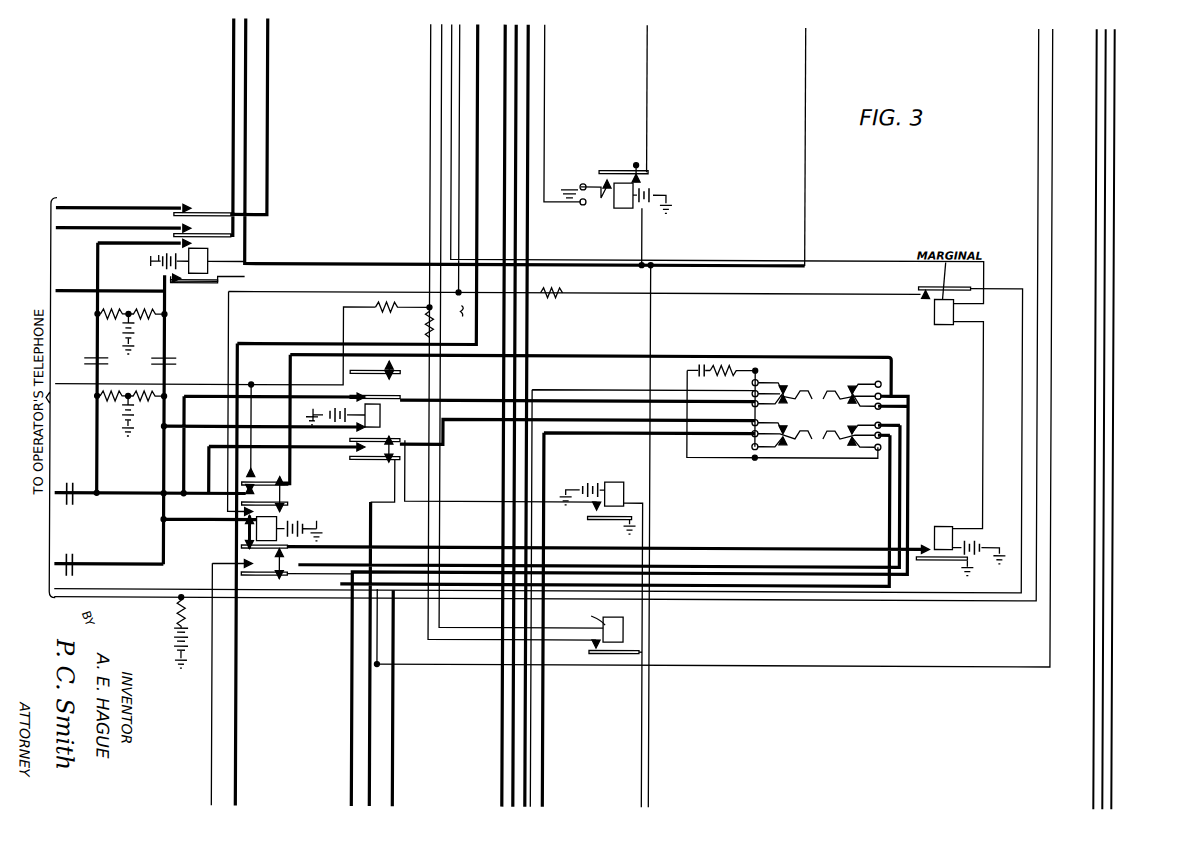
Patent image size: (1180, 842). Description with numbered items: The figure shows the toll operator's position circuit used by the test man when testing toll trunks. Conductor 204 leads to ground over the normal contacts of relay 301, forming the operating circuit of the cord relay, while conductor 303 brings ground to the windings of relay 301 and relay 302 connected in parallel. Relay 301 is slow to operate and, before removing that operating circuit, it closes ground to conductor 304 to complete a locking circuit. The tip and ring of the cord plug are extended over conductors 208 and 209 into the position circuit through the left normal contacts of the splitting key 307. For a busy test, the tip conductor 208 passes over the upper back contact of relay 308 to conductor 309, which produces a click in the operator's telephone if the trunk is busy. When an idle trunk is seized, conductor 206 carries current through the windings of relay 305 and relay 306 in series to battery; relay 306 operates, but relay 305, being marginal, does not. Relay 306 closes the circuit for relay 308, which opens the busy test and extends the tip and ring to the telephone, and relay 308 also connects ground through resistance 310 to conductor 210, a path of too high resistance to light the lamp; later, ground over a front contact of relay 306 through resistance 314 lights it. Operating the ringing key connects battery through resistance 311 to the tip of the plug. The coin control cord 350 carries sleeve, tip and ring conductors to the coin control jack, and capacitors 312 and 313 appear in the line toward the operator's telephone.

The conductor 204 is at (545, 82).
The conductor 206 is at (440, 167).
The conductor 208 is at (502, 722).
The conductor 209 is at (514, 742).
The conductor 210 is at (429, 148).
The relay 301 is at (621, 183).
The relay 302 is at (193, 250).
The conductor 303 is at (804, 82).
The conductor 304 is at (648, 82).
The marginal relay 305 is at (615, 645).
The relay 306 is at (615, 482).
The splitting key 307 is at (764, 408).
The relay 308 is at (376, 430).
The conductor 309 is at (207, 386).
The resistance 310 is at (380, 310).
The resistance 311 is at (175, 606).
The capacitor 312 is at (58, 493).
The capacitor 313 is at (58, 565).
The resistance 314 is at (433, 327).
The coin control cord 350 is at (1088, 358).